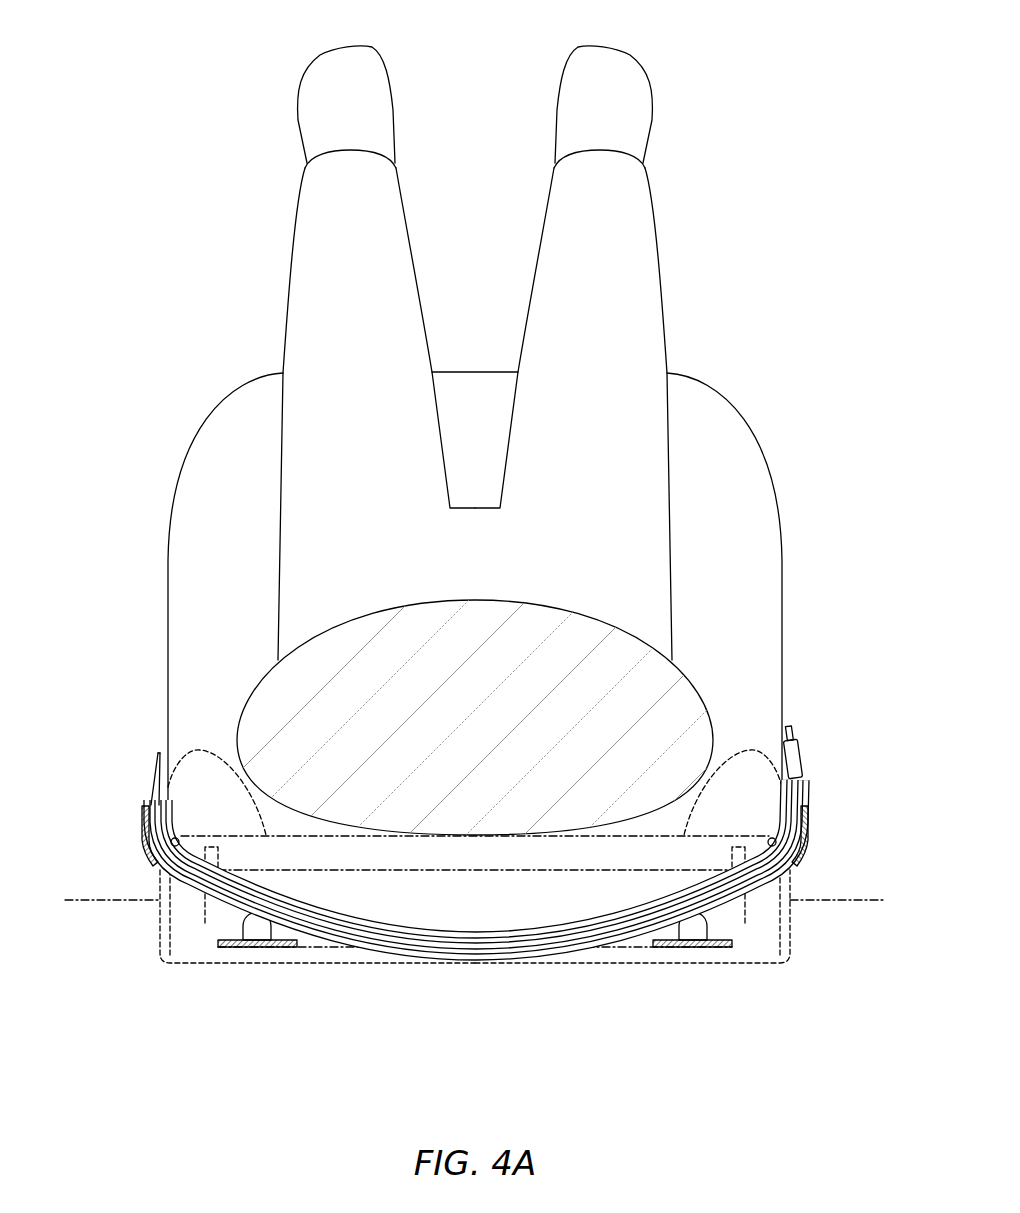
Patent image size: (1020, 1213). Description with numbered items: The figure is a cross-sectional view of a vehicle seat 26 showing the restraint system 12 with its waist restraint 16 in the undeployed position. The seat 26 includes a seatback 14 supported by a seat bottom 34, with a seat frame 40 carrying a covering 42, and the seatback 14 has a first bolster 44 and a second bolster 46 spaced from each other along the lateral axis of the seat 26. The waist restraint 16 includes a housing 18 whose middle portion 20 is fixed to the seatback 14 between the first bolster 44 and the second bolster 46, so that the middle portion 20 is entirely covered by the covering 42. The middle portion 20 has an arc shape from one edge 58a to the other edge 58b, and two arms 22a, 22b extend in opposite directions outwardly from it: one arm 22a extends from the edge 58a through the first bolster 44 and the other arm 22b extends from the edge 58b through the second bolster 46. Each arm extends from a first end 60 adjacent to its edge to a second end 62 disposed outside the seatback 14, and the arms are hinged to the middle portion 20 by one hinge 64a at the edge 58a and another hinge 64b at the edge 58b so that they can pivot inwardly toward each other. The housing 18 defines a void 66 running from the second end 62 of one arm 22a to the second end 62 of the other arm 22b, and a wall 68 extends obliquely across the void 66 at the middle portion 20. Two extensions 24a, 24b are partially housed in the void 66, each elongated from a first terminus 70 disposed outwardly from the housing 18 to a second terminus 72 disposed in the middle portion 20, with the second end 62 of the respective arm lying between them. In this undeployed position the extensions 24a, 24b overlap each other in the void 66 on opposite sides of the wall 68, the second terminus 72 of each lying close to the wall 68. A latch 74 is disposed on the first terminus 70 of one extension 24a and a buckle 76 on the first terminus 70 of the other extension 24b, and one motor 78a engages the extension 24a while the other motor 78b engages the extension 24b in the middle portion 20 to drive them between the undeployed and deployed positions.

The restraint system 12 is at (346, 1014).
The seatback 14 is at (792, 920).
The waist restraint 16 is at (585, 906).
The housing 18 is at (462, 962).
The middle portion 20 is at (478, 932).
The arm 22a is at (144, 815).
The arm 22b is at (812, 815).
The extension 24a is at (150, 803).
The extension 24b is at (810, 802).
The seat 26 is at (762, 448).
The seat bottom 34 is at (779, 533).
The seat frame 40 is at (200, 925).
The covering 42 is at (232, 500).
The first bolster 44 is at (200, 750).
The second bolster 46 is at (751, 750).
The edge 58a is at (162, 862).
The edge 58b is at (795, 865).
The first end 60 is at (153, 853).
The second end 62 is at (170, 800).
The hinge 64a is at (180, 840).
The hinge 64b is at (770, 840).
The void 66 is at (636, 921).
The wall 68 is at (366, 930).
The first terminus 70 is at (152, 785).
The second terminus 72 is at (380, 932).
The latch 74 is at (158, 760).
The buckle 76 is at (800, 742).
The motor 78a is at (243, 930).
The motor 78b is at (708, 930).